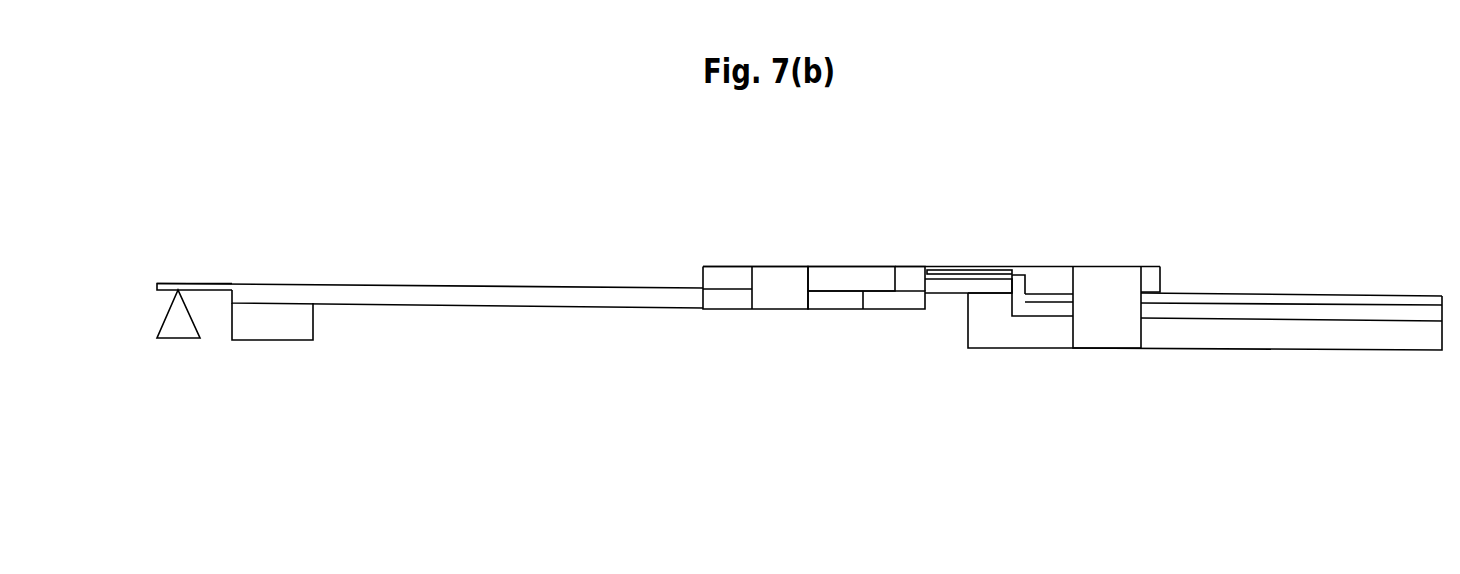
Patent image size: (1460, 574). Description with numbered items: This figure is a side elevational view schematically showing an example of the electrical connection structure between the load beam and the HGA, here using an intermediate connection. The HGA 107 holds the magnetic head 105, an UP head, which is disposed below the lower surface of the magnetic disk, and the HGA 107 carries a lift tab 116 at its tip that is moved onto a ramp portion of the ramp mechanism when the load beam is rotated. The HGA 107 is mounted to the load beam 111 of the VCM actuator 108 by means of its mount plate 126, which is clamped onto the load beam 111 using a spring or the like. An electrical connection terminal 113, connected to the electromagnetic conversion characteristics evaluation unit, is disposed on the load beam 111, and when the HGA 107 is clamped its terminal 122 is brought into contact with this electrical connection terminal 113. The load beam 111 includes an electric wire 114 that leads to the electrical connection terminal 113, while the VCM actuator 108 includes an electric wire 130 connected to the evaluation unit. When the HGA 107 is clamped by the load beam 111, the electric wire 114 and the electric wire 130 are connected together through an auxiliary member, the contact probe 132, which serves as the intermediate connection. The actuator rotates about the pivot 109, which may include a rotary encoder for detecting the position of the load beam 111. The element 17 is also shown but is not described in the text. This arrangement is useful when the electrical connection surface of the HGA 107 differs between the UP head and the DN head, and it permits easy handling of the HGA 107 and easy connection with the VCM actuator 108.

The sensor 17 is at (176, 340).
The magnetic head 105 is at (272, 328).
The HGA 107 is at (490, 318).
The VCM actuator 108 is at (1218, 342).
The pivot 109 is at (1107, 342).
The load beam 111 is at (853, 278).
The electrical connection terminal 113 is at (908, 268).
The electric wire 114 is at (972, 266).
The lift tab 116 is at (168, 282).
The terminal 122 is at (896, 298).
The mount plate 126 is at (728, 300).
The electric wire 130 is at (1040, 320).
The auxiliary member (contact probe) 132 is at (1018, 291).